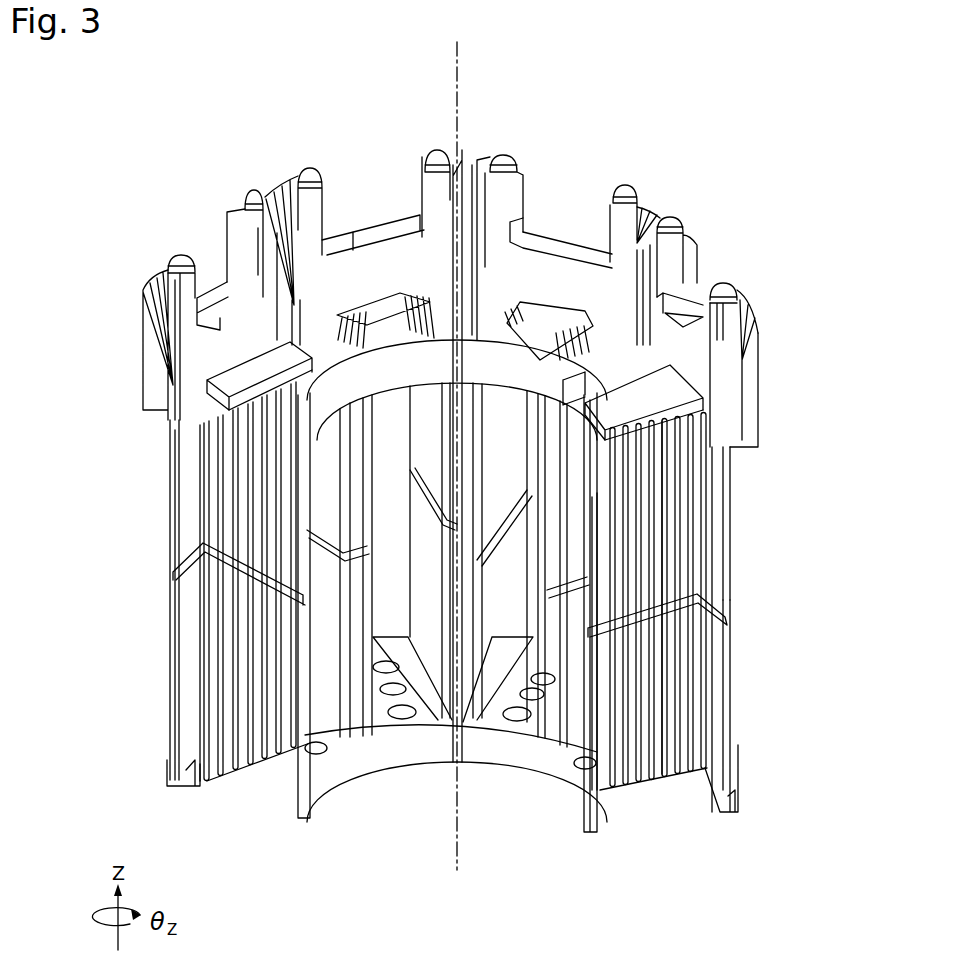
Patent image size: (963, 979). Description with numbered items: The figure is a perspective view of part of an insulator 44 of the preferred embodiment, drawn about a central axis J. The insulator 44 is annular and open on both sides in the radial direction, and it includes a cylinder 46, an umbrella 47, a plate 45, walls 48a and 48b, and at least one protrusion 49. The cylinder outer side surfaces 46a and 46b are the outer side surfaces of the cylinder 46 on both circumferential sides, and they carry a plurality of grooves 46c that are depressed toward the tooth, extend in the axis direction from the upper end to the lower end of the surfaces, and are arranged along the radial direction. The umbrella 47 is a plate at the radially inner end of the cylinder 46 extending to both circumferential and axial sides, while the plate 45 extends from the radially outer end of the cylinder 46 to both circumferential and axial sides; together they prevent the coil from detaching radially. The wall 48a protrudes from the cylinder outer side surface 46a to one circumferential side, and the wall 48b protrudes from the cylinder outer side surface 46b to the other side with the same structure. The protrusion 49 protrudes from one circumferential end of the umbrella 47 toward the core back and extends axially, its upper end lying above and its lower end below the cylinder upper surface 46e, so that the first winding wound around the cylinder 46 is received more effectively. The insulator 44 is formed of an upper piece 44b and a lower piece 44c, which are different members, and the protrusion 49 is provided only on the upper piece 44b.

The insulator 44 is at (318, 158).
The upper piece 44b is at (745, 559).
The lower piece 44c is at (745, 688).
The plate 45 is at (710, 387).
The cylinder 46 is at (712, 525).
The cylinder outer side surface 46a is at (593, 492).
The cylinder outer side surface 46b is at (263, 533).
The groove 46c is at (690, 558).
The cylinder upper surface 46e is at (613, 433).
The umbrella 47 is at (563, 397).
The wall 48a is at (667, 497).
The wall 48b is at (245, 436).
The protrusion 49 is at (663, 530).
The central axis J is at (466, 74).